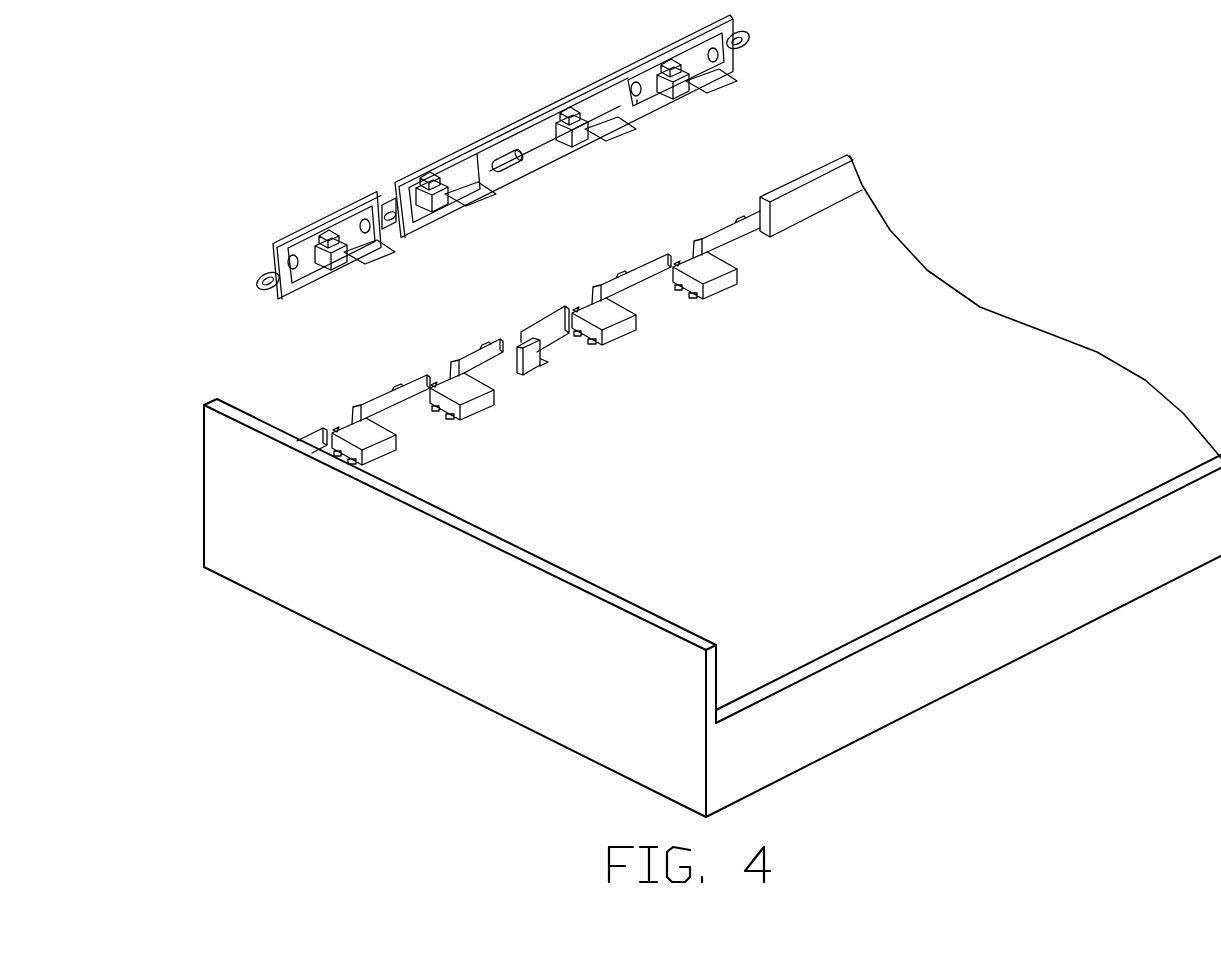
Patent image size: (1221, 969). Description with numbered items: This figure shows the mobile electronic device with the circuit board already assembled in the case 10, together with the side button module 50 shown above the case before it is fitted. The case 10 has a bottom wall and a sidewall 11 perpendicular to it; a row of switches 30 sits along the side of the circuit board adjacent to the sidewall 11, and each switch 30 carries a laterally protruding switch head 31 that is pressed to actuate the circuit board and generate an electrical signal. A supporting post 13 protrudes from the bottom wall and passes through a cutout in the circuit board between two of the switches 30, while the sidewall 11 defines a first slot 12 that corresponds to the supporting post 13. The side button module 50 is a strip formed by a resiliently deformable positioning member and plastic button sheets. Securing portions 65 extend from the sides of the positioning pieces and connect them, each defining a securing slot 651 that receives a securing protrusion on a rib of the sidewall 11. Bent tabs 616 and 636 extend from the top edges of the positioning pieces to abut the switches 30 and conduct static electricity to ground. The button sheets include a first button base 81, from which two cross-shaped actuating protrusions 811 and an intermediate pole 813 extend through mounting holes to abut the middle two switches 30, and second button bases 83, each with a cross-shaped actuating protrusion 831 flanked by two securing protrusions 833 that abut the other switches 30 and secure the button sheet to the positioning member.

The case 10 is at (1093, 312).
The sidewall 11 is at (849, 166).
The first slot 12 is at (433, 382).
The supporting post 13 is at (530, 357).
The switch 30 is at (478, 385).
The switch head 31 is at (443, 377).
The side button module 50 is at (247, 252).
The securing portion 65 is at (751, 32).
The securing slot 651 is at (745, 44).
The first button base 81 is at (530, 107).
The actuating protrusion 811 is at (588, 142).
The pole 813 is at (498, 157).
The second button base 83 is at (628, 65).
The actuating protrusion 831 is at (690, 87).
The securing protrusion 833 is at (643, 95).
The bent tab 616 is at (440, 178).
The bent tab 636 is at (337, 225).